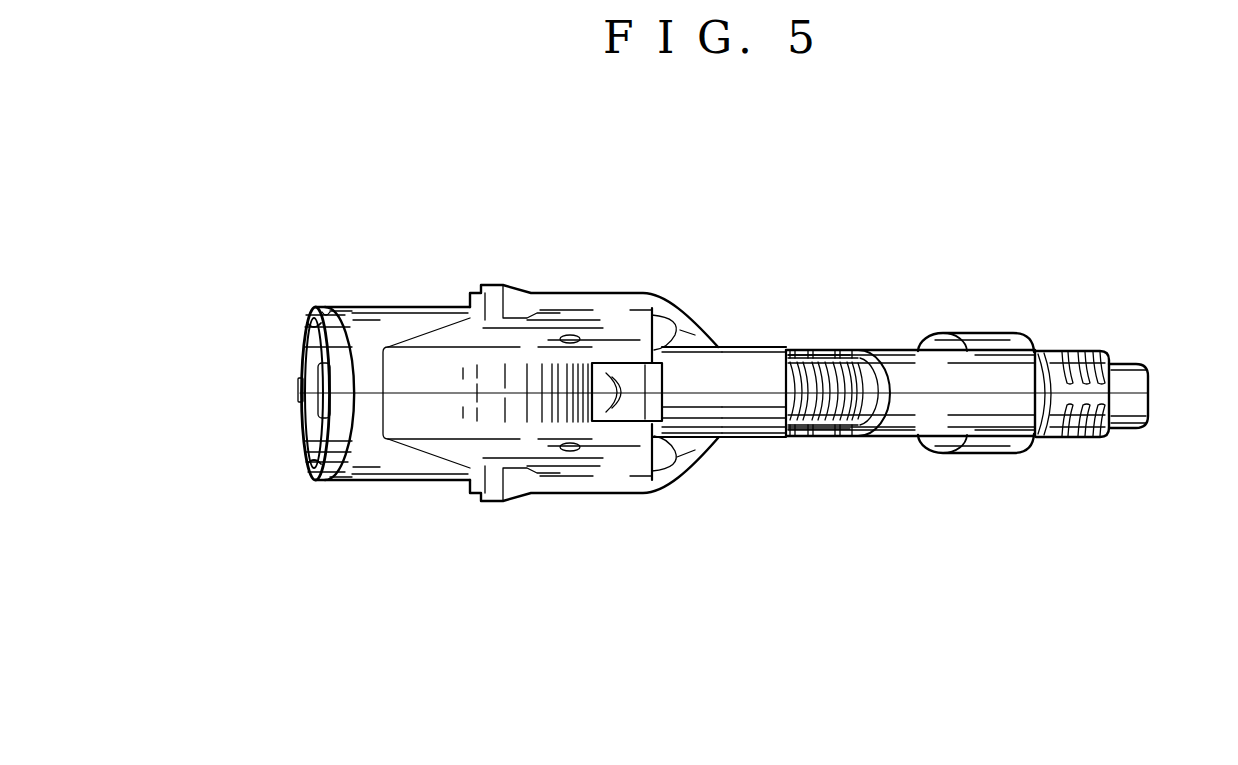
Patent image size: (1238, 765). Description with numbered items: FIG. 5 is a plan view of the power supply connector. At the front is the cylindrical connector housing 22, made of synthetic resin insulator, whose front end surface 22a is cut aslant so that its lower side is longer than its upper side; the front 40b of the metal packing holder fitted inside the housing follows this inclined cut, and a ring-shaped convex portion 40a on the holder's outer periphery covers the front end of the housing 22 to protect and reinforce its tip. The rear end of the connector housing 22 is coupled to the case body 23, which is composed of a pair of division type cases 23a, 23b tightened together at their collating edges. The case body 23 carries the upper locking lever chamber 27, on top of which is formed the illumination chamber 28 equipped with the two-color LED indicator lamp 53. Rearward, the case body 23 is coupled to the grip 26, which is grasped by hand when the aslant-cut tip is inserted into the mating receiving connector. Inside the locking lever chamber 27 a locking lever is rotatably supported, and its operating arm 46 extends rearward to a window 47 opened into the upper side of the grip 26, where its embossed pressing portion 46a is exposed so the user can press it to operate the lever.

The connector housing 22 is at (387, 474).
The front end surface 22a is at (347, 452).
The case body 23 is at (706, 475).
The division type case 23a is at (703, 377).
The division type case 23b is at (757, 439).
The grip 26 is at (942, 437).
The locking lever chamber 27 is at (597, 315).
The illumination chamber 28 is at (668, 358).
The ring-shaped convex portion 40a is at (337, 308).
The front of the packing holder 40b is at (318, 307).
The operating arm 46 is at (849, 339).
The pressing portion 46a is at (822, 348).
The window 47 is at (858, 435).
The two-color indicator lamp 53 is at (601, 378).